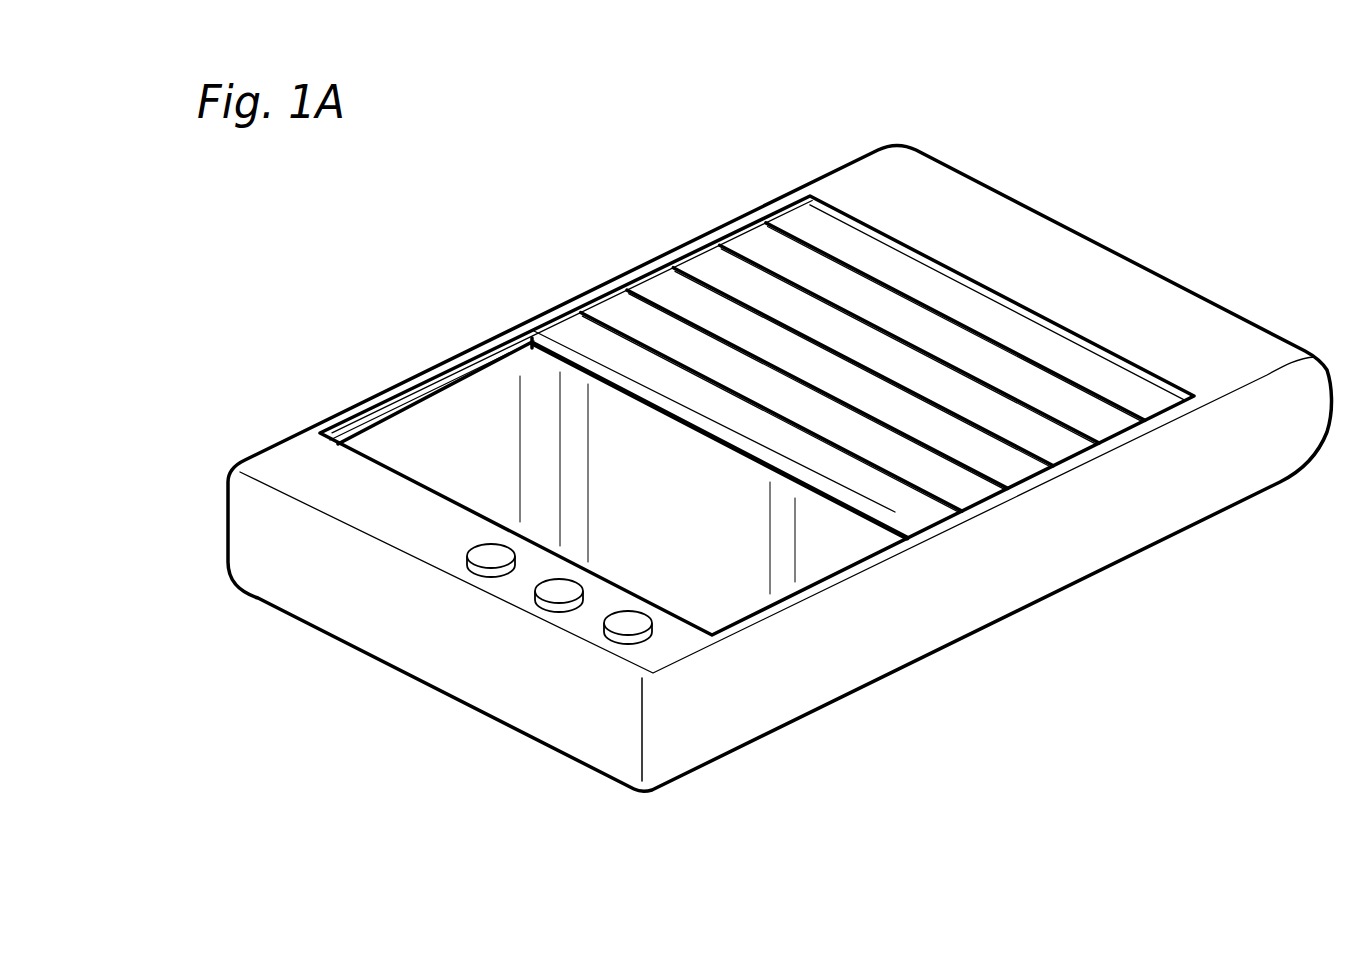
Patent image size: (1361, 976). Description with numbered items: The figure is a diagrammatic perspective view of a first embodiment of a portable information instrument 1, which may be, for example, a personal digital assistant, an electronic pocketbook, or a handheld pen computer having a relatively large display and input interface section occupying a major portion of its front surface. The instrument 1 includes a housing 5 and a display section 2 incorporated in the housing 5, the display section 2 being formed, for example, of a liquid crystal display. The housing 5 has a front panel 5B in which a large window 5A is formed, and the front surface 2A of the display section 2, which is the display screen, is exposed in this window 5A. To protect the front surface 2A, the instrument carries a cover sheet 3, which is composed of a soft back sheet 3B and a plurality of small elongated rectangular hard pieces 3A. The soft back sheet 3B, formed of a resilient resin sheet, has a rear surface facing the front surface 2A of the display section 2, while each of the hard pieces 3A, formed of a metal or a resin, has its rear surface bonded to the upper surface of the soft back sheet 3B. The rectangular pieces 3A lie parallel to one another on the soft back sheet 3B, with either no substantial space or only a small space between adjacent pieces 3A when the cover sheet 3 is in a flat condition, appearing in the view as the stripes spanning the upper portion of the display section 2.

The portable information instrument 1 is at (793, 154).
The display section 2 is at (440, 452).
The front surface 2A is at (492, 403).
The cover sheet 3 is at (720, 269).
The small elongated rectangular hard pieces 3A is at (567, 330).
The soft back sheet 3B is at (518, 340).
The housing 5 is at (715, 690).
The window 5A is at (812, 581).
The front panel 5B is at (293, 458).